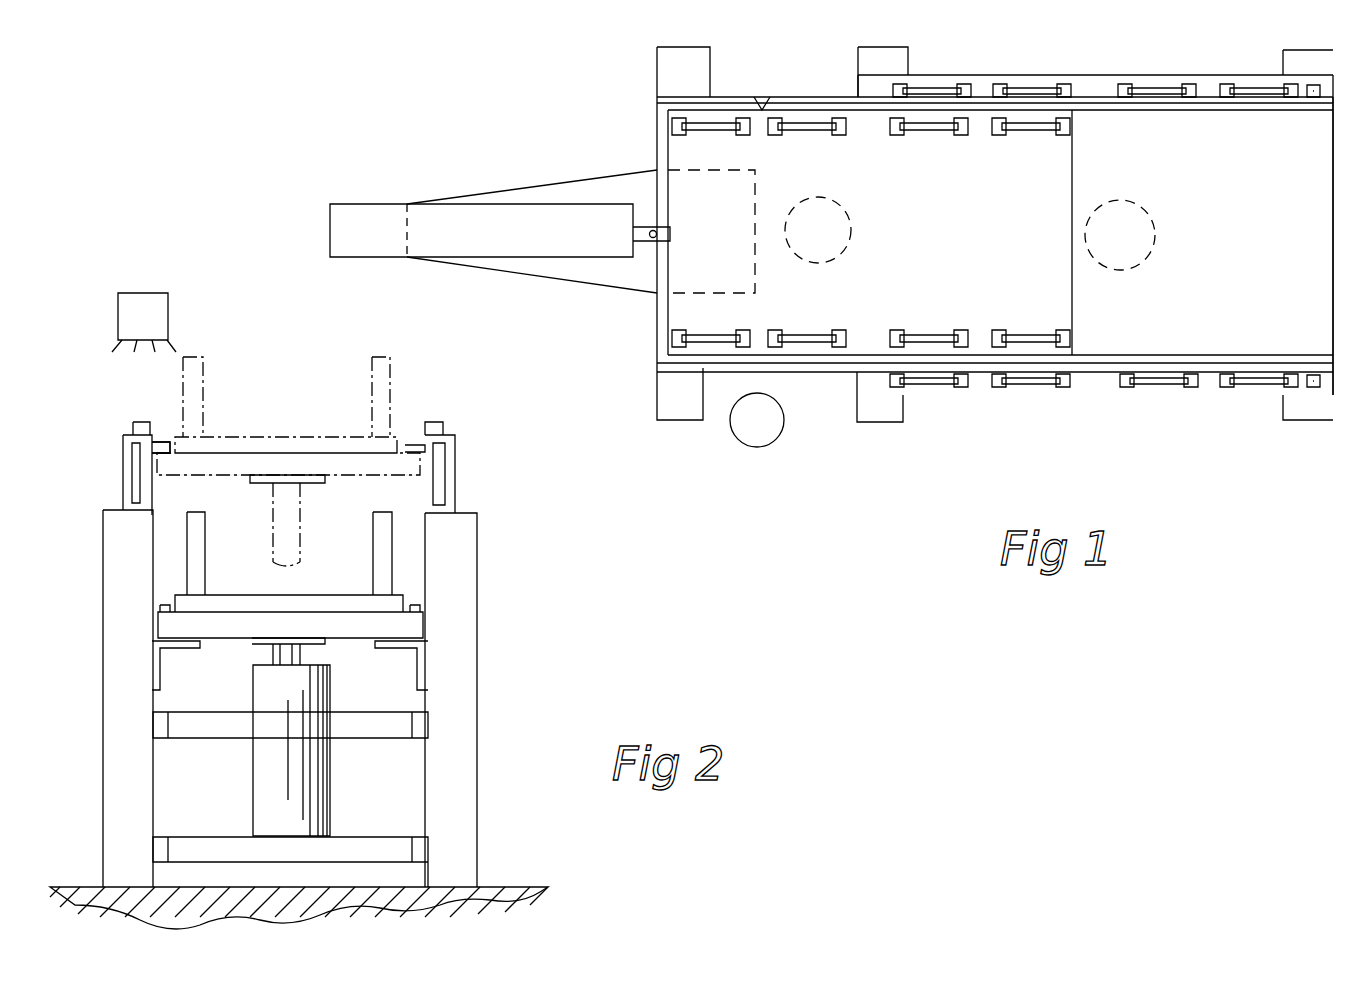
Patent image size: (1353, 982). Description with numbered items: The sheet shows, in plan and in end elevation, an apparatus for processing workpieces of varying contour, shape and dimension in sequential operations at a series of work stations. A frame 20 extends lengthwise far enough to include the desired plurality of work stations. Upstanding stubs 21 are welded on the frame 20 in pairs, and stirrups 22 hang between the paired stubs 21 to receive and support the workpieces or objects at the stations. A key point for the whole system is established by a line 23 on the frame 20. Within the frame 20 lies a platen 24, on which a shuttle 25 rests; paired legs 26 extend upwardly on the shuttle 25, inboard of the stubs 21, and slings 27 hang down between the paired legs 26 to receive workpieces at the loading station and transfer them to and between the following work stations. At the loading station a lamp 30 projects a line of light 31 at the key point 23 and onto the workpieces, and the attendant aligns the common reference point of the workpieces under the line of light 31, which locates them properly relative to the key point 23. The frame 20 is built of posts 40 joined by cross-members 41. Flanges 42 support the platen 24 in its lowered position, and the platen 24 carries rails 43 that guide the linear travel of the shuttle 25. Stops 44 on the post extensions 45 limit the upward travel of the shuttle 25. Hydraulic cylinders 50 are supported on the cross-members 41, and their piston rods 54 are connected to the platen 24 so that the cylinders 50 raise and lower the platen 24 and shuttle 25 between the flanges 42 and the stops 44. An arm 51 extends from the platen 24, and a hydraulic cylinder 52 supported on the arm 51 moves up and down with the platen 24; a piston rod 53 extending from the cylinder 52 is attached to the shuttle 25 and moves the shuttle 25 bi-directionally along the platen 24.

In FIG. 1, the frame 20 is at (1093, 402).
In FIG. 2, the frame 20 is at (478, 655).
In FIG. 1, the upstanding stubs 21 is at (1008, 388).
In FIG. 2, the upstanding stubs 21 is at (470, 418).
In FIG. 1, the stirrups 22 is at (935, 388).
In FIG. 1, the key point line 23 is at (762, 96).
In FIG. 1, the platen 24 is at (1249, 281).
In FIG. 2, the platen 24 is at (215, 478).
In FIG. 1, the shuttle 25 is at (996, 264).
In FIG. 2, the shuttle 25 is at (245, 437).
In FIG. 1, the paired legs 26 is at (840, 136).
In FIG. 2, the paired legs 26 is at (392, 380).
In FIG. 1, the slings 27 is at (928, 137).
In FIG. 1, the lamp 30 is at (765, 440).
In FIG. 2, the lamp 30 is at (168, 312).
In FIG. 2, the line of light 31 is at (128, 348).
In FIG. 1, the posts 40 is at (1320, 440).
In FIG. 2, the posts 40 is at (100, 640).
In FIG. 2, the cross-members 41 is at (200, 740).
In FIG. 2, the flanges 42 is at (418, 680).
In FIG. 2, the rails 43 is at (168, 603).
In FIG. 2, the stops 44 is at (160, 440).
In FIG. 1, the post extensions 45 is at (1100, 78).
In FIG. 2, the post extensions 45 is at (455, 480).
In FIG. 1, the hydraulic cylinders 50 is at (850, 224).
In FIG. 2, the hydraulic cylinders 50 is at (322, 768).
In FIG. 1, the arm 51 is at (572, 270).
In FIG. 1, the hydraulic cylinder 52 is at (372, 258).
In FIG. 1, the piston rod 53 is at (645, 225).
In FIG. 2, the piston rods 54 is at (300, 500).